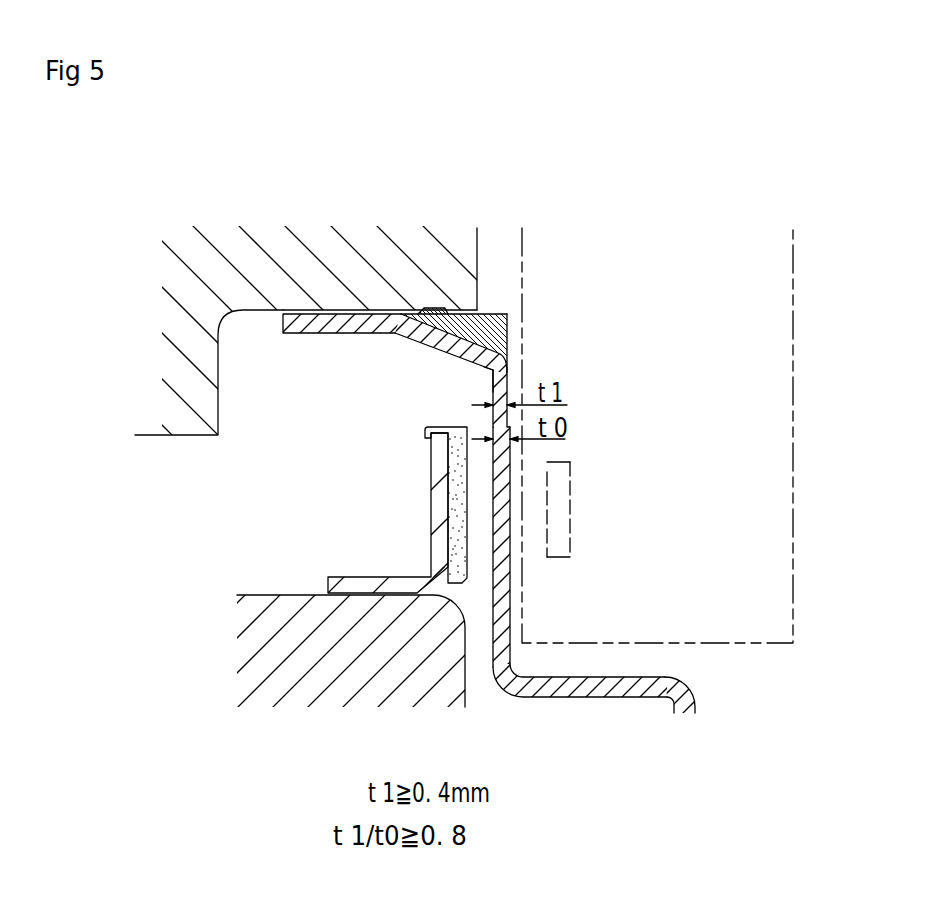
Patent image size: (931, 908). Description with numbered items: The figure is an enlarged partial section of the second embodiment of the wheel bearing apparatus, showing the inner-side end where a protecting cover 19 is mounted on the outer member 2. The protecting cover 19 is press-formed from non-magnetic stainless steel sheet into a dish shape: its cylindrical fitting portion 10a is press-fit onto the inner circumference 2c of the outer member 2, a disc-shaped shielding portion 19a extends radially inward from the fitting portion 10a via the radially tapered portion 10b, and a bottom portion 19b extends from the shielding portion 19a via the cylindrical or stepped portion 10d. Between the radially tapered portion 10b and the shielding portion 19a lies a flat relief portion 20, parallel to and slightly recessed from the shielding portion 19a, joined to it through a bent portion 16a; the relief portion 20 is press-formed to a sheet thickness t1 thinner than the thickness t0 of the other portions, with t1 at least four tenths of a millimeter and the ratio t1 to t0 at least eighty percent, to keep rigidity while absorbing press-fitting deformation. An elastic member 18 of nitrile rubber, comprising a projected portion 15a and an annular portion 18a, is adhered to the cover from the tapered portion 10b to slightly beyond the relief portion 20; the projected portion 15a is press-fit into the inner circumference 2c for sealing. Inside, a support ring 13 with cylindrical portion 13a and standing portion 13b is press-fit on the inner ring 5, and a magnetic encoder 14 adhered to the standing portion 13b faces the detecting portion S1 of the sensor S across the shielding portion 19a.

The outer member 2 is at (197, 290).
The inner circumference of the inner-side end of the outer member 2c is at (316, 334).
The inner ring 5 is at (327, 647).
The fitting portion 10a is at (375, 320).
The radially tapered portion 10b is at (443, 345).
The cylindrical or stepped portion 10d is at (555, 680).
The support ring 13 is at (265, 513).
The cylindrical portion 13a is at (385, 583).
The standing portion 13b is at (433, 516).
The magnetic encoder 14 is at (433, 516).
The projected portion 15a is at (428, 306).
The bent portion 16a is at (490, 372).
The elastic member 18 is at (495, 200).
The annular portion 18a is at (486, 310).
The protecting cover 19 is at (590, 665).
The shielding portion 19a is at (503, 469).
The bottom portion 19b is at (690, 708).
The flat relief portion 20 is at (508, 388).
The sensor S is at (672, 272).
The detecting portion S1 is at (558, 490).